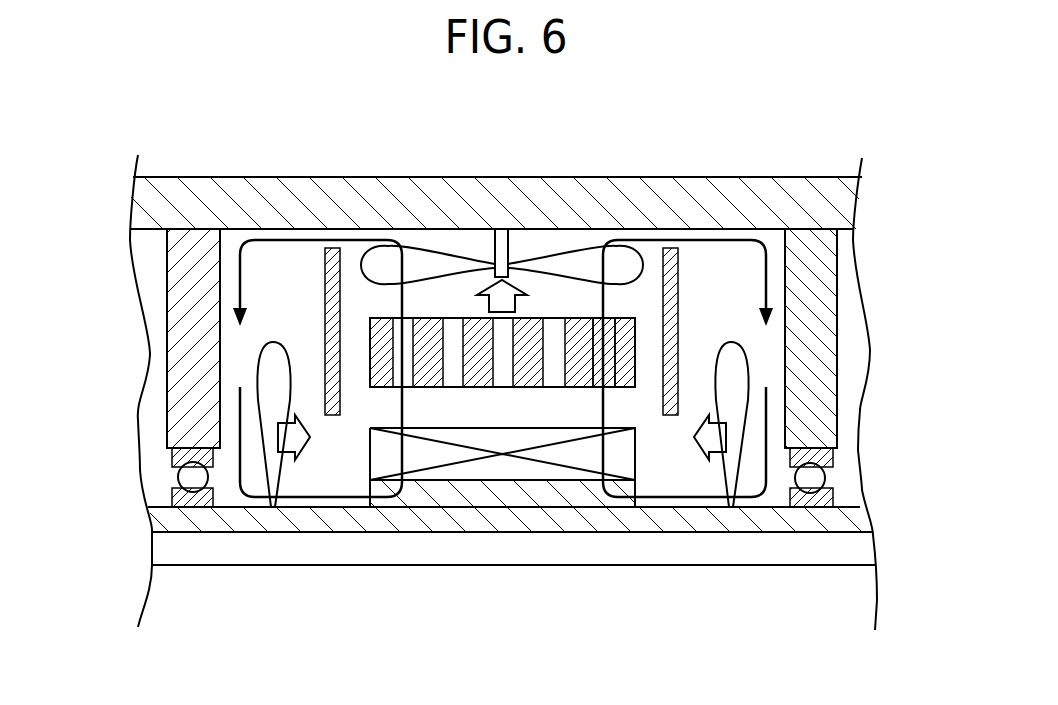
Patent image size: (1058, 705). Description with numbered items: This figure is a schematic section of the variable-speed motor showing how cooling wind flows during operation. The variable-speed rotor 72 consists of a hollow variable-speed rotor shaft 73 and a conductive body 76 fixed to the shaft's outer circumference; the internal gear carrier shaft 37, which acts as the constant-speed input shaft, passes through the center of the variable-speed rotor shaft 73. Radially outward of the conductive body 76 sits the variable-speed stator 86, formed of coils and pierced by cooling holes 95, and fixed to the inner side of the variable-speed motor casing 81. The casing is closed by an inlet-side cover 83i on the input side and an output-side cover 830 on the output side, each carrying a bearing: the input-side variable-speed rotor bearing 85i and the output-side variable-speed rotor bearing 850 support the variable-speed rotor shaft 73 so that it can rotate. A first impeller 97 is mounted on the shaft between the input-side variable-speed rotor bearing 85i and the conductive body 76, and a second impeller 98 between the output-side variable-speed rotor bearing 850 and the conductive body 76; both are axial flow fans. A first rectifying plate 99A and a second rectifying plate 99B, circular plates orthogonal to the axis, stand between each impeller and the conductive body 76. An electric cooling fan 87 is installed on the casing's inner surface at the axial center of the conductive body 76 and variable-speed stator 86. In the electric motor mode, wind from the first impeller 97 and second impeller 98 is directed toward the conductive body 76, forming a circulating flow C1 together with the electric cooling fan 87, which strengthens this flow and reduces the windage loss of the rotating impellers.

The variable-speed motor casing 81 is at (503, 172).
The circulating flow C1 is at (285, 240).
The first rectifying plate 99A is at (332, 246).
The second rectifying plate 99B is at (672, 247).
The variable-speed stator 86 is at (433, 302).
The electric cooling fan 87 is at (560, 243).
The inlet-side cover 83i is at (182, 317).
The output-side cover 830 is at (817, 360).
The first impeller 97 is at (276, 342).
The second impeller 98 is at (731, 342).
The cooling holes 95 is at (413, 365).
The input-side variable-speed rotor bearing 85i is at (192, 478).
The output-side variable-speed rotor bearing 850 is at (817, 478).
The variable-speed rotor 72 is at (510, 553).
The variable-speed rotor shaft 73 is at (453, 508).
The conductive body 76 is at (533, 465).
The internal gear carrier shaft 37 is at (842, 585).